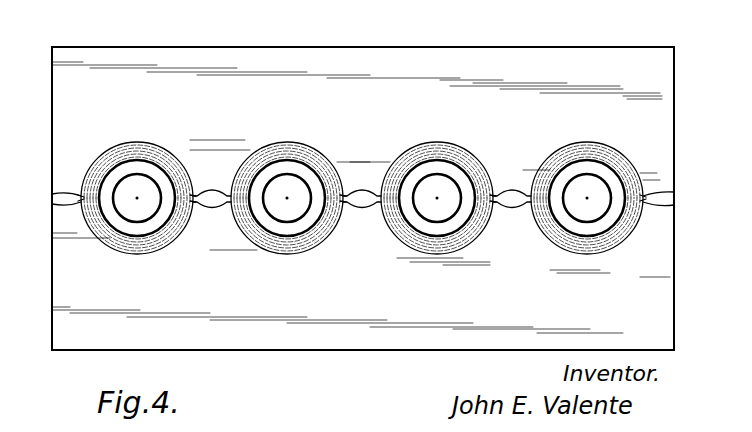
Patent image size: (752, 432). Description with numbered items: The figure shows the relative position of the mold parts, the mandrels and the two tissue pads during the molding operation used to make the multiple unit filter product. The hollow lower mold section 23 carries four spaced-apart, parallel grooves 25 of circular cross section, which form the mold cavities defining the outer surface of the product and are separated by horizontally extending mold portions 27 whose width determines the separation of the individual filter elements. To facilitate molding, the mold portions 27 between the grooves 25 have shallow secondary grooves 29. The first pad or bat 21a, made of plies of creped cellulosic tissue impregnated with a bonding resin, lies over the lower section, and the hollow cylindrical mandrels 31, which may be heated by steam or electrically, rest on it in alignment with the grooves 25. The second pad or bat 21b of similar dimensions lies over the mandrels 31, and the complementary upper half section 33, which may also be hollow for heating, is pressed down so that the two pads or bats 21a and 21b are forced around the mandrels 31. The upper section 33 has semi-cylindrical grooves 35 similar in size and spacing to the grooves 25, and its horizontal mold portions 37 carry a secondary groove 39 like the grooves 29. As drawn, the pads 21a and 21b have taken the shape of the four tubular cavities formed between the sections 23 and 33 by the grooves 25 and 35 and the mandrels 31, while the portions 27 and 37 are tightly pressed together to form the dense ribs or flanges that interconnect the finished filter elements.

The pad or bat 21a is at (118, 252).
The second pad or bat 21b is at (122, 152).
The mold section 23 is at (650, 319).
The grooves 25 is at (152, 251).
The horizontal mold portions 27 is at (78, 207).
The secondary grooves 29 is at (70, 205).
The mandrels 31 is at (162, 178).
The upper half section 33 is at (492, 57).
The semi-cylindrical grooves 35 is at (152, 143).
The horizontal mold portions 37 is at (62, 193).
The secondary groove 39 is at (78, 196).